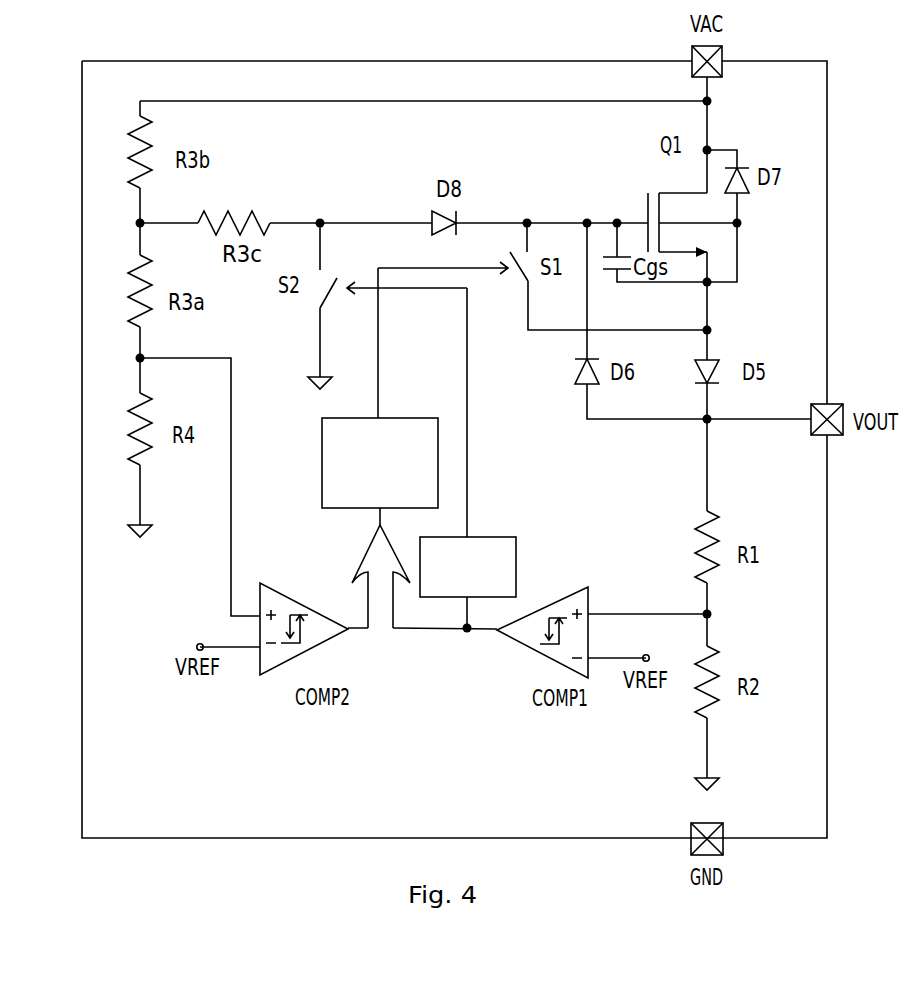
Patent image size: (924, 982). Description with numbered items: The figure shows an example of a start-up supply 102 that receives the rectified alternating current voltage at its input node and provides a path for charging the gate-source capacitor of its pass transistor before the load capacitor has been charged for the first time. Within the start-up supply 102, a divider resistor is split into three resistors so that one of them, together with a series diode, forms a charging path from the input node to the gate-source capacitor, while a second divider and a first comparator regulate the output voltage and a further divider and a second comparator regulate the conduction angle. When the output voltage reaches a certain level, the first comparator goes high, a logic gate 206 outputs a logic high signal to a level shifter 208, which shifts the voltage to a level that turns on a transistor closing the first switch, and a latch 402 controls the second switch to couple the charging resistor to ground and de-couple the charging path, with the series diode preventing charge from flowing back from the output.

The start-up supply 102 is at (428, 811).
The logic gate 206 is at (367, 552).
The level shifter 208 is at (426, 416).
The latch 402 is at (518, 537).